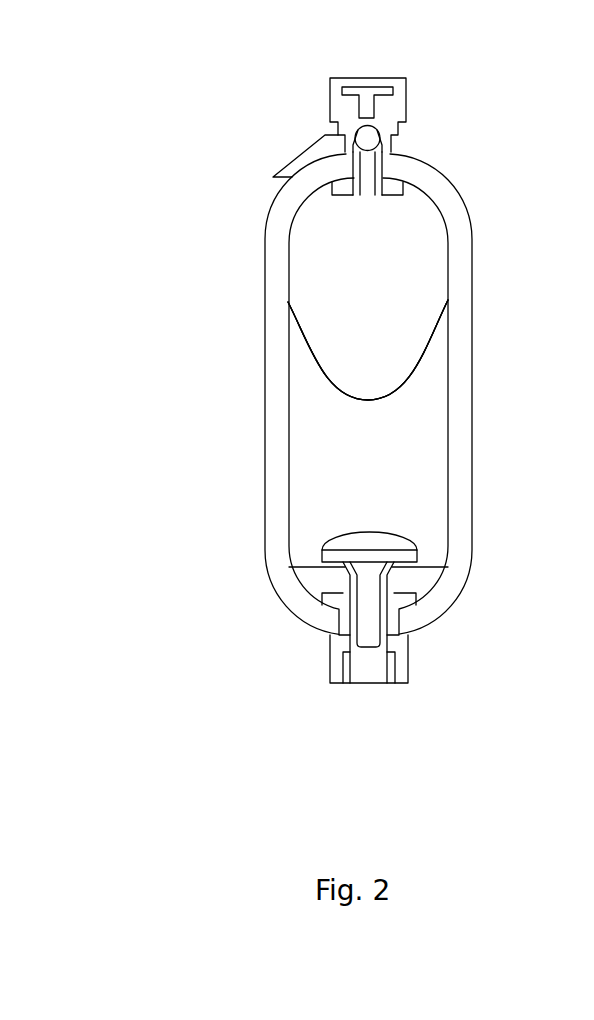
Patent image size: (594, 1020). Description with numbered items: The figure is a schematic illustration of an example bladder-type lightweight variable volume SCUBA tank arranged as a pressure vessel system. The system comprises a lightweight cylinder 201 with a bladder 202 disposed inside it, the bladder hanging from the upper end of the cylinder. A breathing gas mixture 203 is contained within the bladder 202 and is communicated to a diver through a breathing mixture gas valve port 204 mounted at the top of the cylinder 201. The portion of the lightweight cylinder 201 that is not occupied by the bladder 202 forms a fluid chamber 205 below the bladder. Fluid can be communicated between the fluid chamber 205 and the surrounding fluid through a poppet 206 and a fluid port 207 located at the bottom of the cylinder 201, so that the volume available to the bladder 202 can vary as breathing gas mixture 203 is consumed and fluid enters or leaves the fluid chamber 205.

The lightweight cylinder 201 is at (469, 511).
The bladder 202 is at (300, 346).
The breathing gas mixture 203 is at (417, 331).
The breathing mixture gas valve port 204 is at (421, 109).
The fluid chamber 205 is at (327, 445).
The poppet 206 is at (383, 610).
The fluid port 207 is at (408, 660).